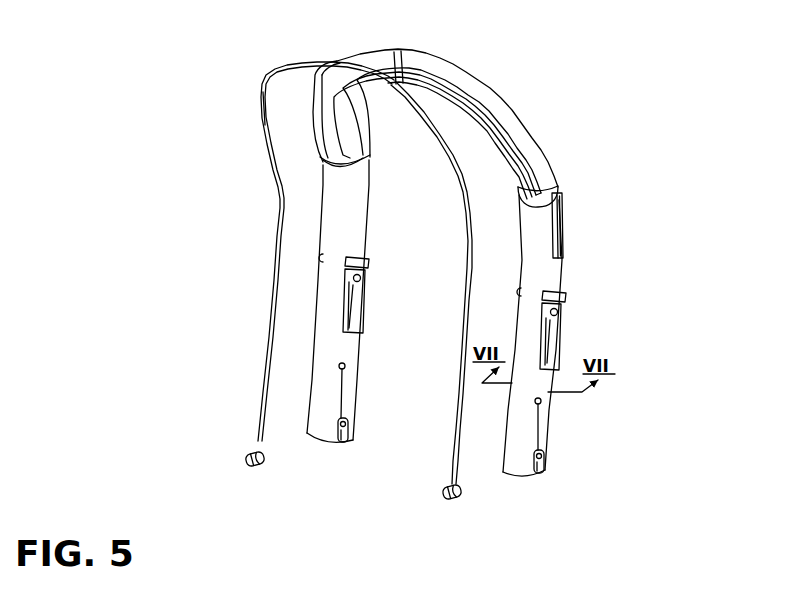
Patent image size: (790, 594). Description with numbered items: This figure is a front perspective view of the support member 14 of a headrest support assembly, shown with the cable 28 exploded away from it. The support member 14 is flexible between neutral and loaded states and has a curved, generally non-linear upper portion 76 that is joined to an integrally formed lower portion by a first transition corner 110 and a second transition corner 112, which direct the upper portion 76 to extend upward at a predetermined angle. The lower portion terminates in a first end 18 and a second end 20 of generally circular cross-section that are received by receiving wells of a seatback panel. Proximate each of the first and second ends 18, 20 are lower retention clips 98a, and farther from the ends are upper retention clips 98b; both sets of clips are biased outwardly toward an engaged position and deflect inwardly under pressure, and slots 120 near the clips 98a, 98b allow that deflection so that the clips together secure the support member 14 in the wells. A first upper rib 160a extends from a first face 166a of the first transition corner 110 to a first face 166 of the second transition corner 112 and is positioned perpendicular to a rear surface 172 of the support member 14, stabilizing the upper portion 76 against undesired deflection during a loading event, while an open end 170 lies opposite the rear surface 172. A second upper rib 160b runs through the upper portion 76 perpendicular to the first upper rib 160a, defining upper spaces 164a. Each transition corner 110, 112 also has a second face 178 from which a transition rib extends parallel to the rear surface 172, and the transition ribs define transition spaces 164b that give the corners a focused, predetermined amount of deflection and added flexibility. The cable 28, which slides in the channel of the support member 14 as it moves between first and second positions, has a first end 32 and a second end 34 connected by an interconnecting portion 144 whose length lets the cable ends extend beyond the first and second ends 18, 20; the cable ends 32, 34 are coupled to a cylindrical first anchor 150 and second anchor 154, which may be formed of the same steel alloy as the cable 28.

The support member 14 is at (236, 43).
The first end 18 is at (303, 437).
The second end 20 is at (513, 475).
The cable 28 is at (282, 186).
The first end 32 is at (245, 458).
The second end 34 is at (443, 493).
The upper portion 76 is at (507, 124).
The lower retention clips 98a is at (347, 433).
The upper retention clips 98b is at (349, 312).
The first transition corner 110 is at (368, 161).
The second transition corner 112 is at (553, 183).
The slots 120 is at (352, 309).
The interconnecting portion 144 is at (262, 103).
The first anchor 150 is at (250, 468).
The second anchor 154 is at (451, 501).
The first upper rib 160a is at (317, 143).
The second upper rib 160b is at (389, 72).
The upper spaces 164a is at (390, 78).
The transition spaces 164b is at (567, 237).
The first face 166 is at (537, 185).
The first face 166a is at (332, 170).
The open end 170 is at (323, 104).
The rear surface 172 is at (460, 70).
The second face 178 is at (560, 207).